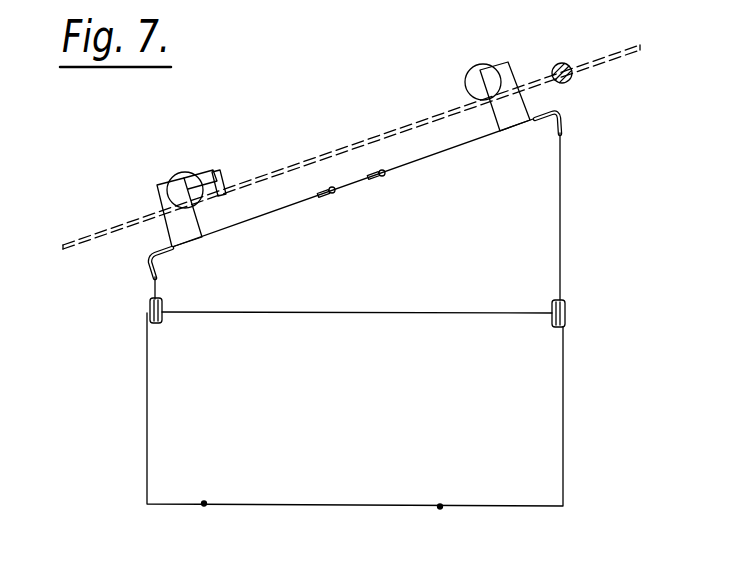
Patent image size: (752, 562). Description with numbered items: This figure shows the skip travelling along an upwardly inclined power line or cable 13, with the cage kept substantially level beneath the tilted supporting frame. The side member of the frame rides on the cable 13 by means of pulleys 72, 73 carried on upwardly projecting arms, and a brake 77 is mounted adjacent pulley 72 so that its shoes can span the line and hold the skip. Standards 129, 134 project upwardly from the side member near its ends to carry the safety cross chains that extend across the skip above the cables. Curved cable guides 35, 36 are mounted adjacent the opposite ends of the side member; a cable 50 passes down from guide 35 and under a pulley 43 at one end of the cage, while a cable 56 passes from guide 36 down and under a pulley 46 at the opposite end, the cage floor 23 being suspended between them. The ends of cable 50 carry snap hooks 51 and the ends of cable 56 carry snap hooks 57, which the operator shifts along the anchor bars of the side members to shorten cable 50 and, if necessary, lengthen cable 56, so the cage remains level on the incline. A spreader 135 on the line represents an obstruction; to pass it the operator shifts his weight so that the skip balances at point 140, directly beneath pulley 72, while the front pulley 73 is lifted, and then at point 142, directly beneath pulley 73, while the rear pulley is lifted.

The power line or cable 13 is at (372, 139).
The floor 23 is at (375, 507).
The curved cable bearing or guide 35 is at (148, 264).
The curved cable bearing or guide 36 is at (563, 114).
The pulley 43 is at (152, 310).
The pulley 46 is at (566, 313).
The cable 50 is at (158, 287).
The snap hook 51 is at (382, 177).
The cable 56 is at (561, 208).
The snap hook 57 is at (331, 194).
The pulley 72 is at (192, 172).
The pulley 73 is at (468, 78).
The brake 77 is at (222, 174).
The standard 129 is at (157, 197).
The standard 134 is at (508, 75).
The spreader 135 is at (594, 44).
The balance point 140 is at (206, 503).
The balance point 142 is at (442, 505).